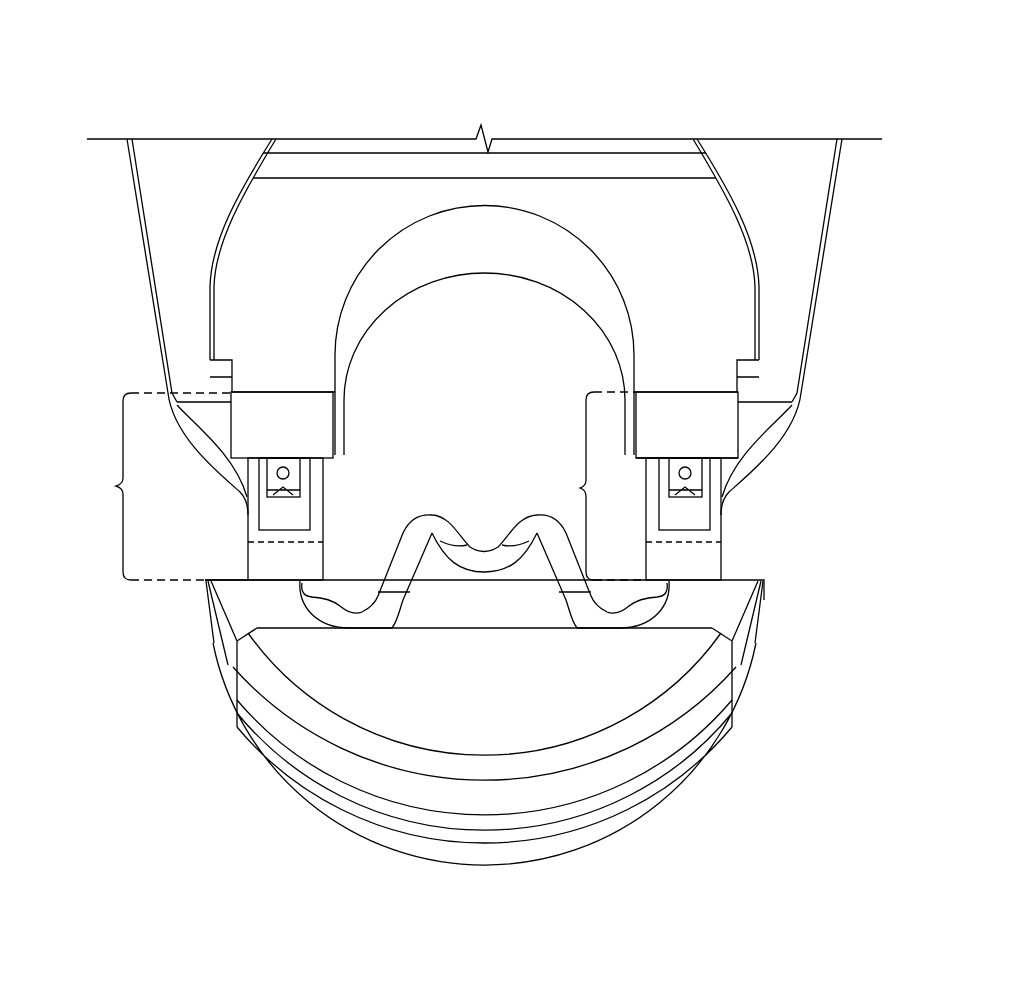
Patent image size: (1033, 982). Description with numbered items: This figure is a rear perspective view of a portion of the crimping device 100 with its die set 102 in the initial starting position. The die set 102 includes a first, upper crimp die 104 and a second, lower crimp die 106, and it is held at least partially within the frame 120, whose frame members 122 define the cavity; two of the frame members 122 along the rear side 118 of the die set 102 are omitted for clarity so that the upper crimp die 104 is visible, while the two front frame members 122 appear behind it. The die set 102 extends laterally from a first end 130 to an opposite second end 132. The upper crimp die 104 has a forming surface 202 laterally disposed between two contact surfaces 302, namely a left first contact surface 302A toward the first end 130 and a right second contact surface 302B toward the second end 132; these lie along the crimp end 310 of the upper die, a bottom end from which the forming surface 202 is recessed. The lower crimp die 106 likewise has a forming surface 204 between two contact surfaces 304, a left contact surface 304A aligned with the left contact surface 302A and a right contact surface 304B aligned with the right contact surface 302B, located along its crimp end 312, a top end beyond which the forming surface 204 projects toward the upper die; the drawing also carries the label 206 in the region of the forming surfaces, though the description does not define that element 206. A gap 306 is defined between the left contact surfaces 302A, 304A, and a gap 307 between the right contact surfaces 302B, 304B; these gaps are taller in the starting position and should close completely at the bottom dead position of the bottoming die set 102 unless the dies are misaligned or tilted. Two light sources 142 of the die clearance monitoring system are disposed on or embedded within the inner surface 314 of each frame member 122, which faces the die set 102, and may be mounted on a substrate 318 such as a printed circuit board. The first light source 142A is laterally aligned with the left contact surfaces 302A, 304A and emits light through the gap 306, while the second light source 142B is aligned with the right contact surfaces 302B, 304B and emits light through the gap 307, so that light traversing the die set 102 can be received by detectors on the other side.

The crimping device 100 is at (163, 68).
The die set 102 is at (225, 337).
The first crimp die 104 is at (255, 242).
The second crimp die 106 is at (270, 665).
The rear side 118 is at (601, 201).
The frame 120 is at (190, 163).
The frame members 122 is at (190, 372).
The first end 130 is at (104, 543).
The second end 132 is at (876, 561).
The light sources 142 is at (290, 474).
The first light source 142A is at (300, 497).
The second light source 142B is at (690, 480).
The forming surface 202 is at (573, 282).
The forming surface 204 is at (536, 514).
The dome 206 is at (550, 385).
The contact surface 302 is at (320, 408).
The first contact surface 302A is at (320, 436).
The second contact surface 302B is at (715, 410).
The contact surface 304 is at (705, 580).
The first contact surface 304A is at (276, 580).
The second contact surface 304B is at (740, 580).
The gap 306 is at (112, 487).
The gap 307 is at (580, 487).
The crimp end 310 is at (731, 470).
The crimp end 312 is at (231, 568).
The inner surface 314 is at (252, 490).
The substrate 318 is at (272, 522).